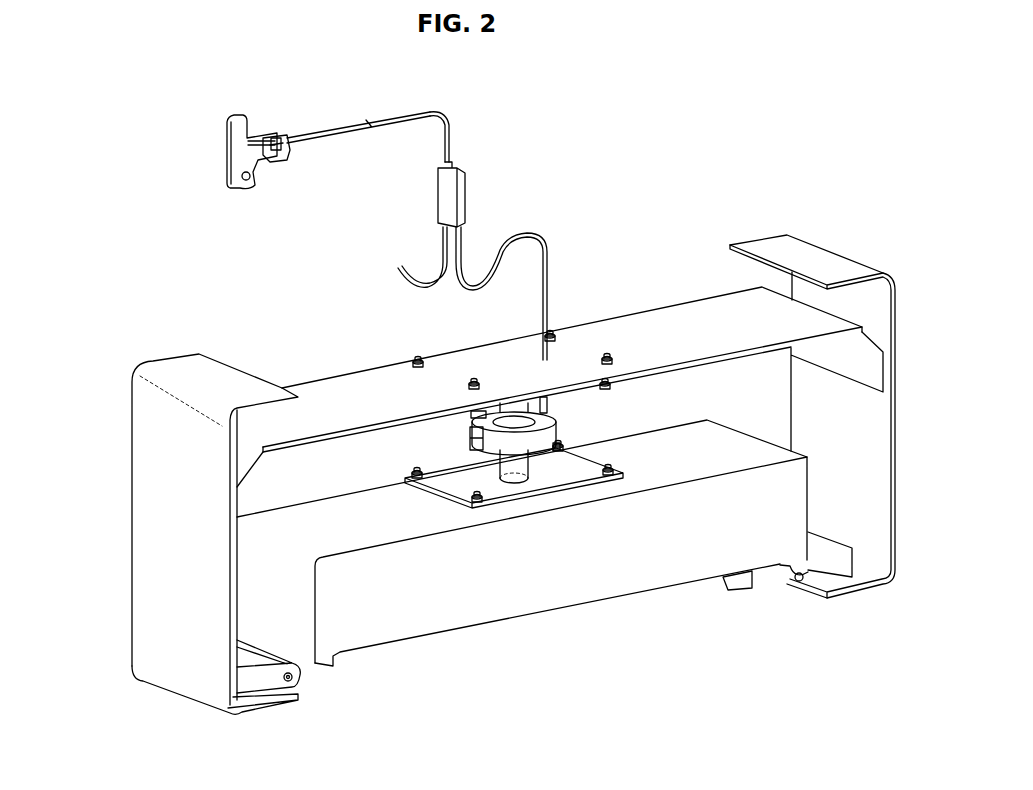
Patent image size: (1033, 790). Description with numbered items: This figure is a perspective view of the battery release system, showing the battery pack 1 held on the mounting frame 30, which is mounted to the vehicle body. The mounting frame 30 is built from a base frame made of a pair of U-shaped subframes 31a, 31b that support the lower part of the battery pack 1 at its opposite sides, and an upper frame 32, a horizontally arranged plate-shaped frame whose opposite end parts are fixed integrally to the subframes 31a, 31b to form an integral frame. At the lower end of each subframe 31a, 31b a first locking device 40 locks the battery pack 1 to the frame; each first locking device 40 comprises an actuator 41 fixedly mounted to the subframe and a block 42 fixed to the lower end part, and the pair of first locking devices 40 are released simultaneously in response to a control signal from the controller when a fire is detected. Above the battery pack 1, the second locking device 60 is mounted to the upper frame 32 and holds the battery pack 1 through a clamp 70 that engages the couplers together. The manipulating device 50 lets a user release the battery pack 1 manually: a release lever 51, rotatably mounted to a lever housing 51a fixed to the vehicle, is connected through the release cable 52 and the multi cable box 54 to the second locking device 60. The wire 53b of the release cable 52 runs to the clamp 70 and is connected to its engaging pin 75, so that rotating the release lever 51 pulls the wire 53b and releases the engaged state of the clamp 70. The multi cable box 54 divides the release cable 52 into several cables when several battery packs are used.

The battery pack 1 is at (530, 618).
The mounting frame 30 is at (491, 485).
The subframe 31a is at (170, 668).
The subframe 31b is at (885, 588).
The upper frame 32 is at (343, 387).
The first locking device 40 is at (544, 612).
The actuator 41 is at (834, 570).
The block 42 is at (742, 588).
The manipulating device 50 is at (403, 242).
The release lever 51 is at (227, 130).
The lever housing 51a is at (287, 157).
The release cable 52 is at (401, 114).
The wire 53b is at (250, 140).
The multi cable box 54 is at (466, 192).
The second locking device 60 is at (499, 519).
The clamp 70 is at (531, 440).
The engaging pin 75 is at (555, 416).